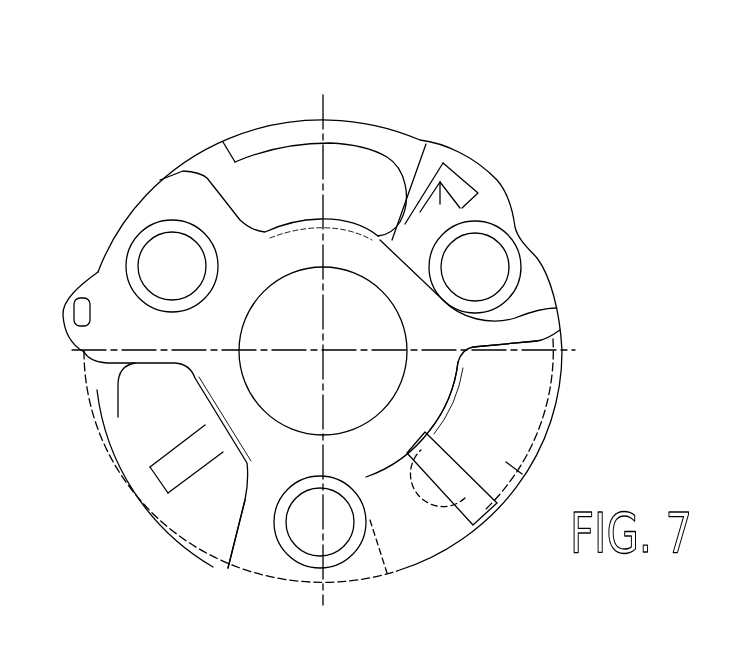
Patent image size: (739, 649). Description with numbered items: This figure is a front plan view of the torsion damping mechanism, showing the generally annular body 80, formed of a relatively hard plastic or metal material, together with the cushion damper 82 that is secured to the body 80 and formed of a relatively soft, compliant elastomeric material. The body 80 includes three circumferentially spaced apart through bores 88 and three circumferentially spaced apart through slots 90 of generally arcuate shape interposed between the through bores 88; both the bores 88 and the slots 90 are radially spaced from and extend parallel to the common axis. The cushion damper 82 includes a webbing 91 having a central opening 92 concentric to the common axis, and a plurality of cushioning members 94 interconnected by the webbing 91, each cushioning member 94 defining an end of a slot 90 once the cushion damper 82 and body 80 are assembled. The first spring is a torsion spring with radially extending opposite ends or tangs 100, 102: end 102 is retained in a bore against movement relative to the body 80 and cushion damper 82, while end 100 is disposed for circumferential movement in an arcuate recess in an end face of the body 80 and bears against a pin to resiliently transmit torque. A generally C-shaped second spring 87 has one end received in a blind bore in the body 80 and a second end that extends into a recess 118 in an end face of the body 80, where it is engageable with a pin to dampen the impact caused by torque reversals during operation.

The body 80 is at (313, 106).
The cushion damper 82 is at (240, 195).
The second spring 87 is at (428, 495).
The through bores 88 is at (165, 236).
The through slots 90 is at (383, 156).
The webbing 91 is at (427, 380).
The central opening 92 is at (372, 412).
The cushioning members 94 is at (527, 323).
The end of first spring 100 is at (172, 470).
The end of first spring 102 is at (440, 205).
The recess 118 is at (511, 475).